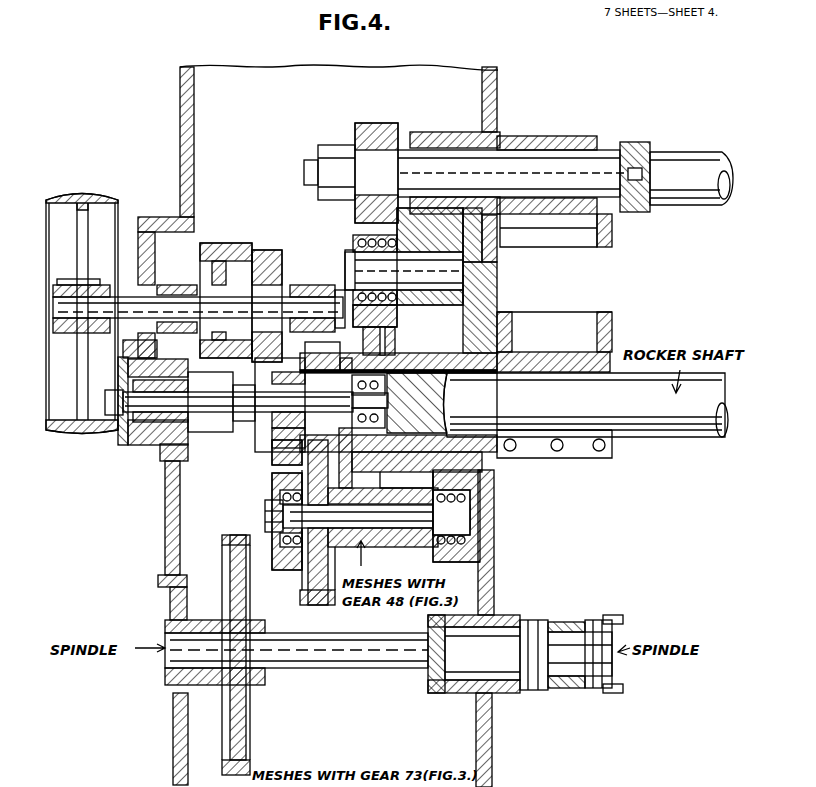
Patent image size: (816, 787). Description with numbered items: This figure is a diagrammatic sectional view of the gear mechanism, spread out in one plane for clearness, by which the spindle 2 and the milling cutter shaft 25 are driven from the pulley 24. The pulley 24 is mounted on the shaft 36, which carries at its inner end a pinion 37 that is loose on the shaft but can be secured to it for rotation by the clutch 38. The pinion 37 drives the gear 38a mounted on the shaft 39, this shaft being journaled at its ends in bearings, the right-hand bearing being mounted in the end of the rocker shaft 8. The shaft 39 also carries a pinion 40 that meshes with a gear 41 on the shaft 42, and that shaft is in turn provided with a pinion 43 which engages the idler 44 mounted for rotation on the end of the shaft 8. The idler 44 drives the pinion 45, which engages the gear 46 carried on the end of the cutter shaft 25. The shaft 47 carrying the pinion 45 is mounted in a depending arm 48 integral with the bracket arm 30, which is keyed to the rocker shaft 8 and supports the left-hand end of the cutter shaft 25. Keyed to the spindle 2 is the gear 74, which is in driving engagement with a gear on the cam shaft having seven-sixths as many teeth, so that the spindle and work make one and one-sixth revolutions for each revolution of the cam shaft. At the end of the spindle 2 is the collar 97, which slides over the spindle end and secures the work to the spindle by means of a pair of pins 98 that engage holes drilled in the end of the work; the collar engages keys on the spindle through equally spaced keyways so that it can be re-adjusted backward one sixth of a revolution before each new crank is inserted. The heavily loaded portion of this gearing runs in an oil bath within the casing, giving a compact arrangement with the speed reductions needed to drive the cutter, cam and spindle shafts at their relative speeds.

The spindle 2 is at (344, 668).
The rocker shaft 8 is at (578, 412).
The pulley 24 is at (82, 196).
The cutter shaft 25 is at (688, 163).
The bracket arm 30 is at (582, 235).
The shaft 36 is at (262, 250).
The pinion 37 is at (285, 285).
The clutch 38 is at (215, 243).
The gear 38a is at (268, 447).
The shaft 39 is at (228, 408).
The pinion 40 is at (322, 372).
The gear 41 is at (303, 598).
The shaft 42 is at (265, 503).
The pinion 43 is at (365, 540).
The idler 44 is at (402, 458).
The pinion 45 is at (395, 310).
The gear 46 is at (355, 135).
The shaft 47 is at (488, 292).
The depending arm 48 is at (470, 230).
The gear 74 is at (248, 760).
The collar 97 is at (588, 690).
The pins 98 is at (614, 688).